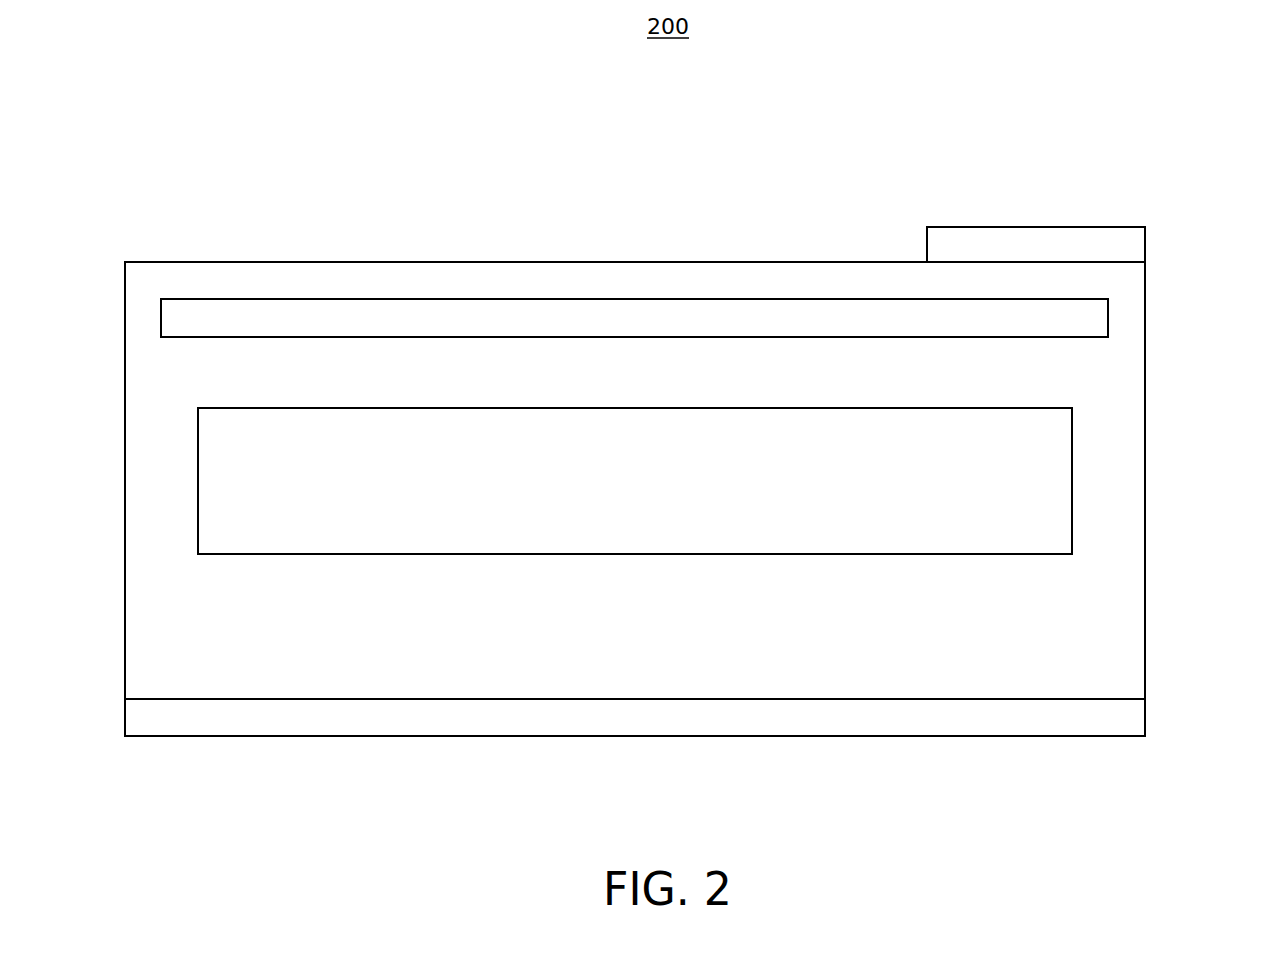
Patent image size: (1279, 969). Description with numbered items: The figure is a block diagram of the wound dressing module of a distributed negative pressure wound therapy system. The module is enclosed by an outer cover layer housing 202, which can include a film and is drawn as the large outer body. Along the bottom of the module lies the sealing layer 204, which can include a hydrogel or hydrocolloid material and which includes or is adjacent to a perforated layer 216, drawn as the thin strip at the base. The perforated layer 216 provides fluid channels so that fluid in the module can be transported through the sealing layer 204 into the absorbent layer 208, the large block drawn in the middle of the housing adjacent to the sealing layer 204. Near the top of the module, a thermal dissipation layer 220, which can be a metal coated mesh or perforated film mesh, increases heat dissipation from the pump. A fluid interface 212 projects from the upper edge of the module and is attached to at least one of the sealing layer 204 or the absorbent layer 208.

The outer cover layer housing 202 is at (1145, 332).
The sealing layer 204 is at (1037, 698).
The absorbent layer 208 is at (1072, 518).
The fluid interface 212 is at (1035, 226).
The perforated layer 216 is at (998, 736).
The thermal dissipation layer 220 is at (726, 298).